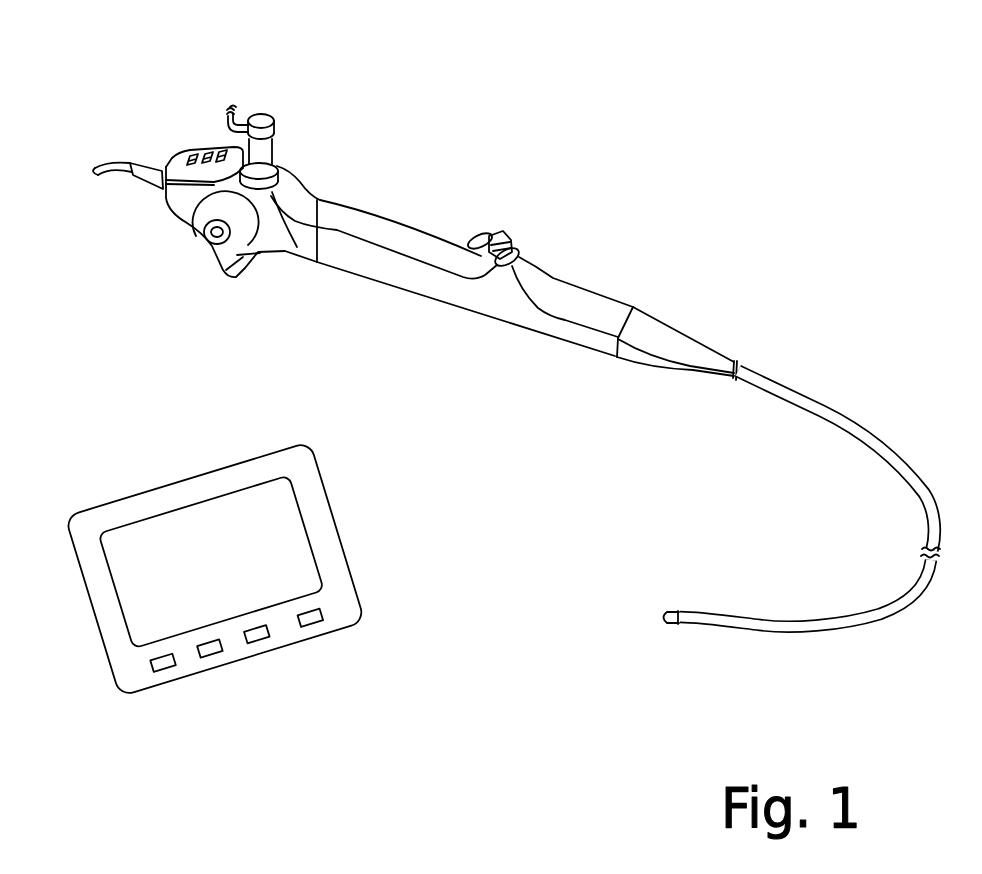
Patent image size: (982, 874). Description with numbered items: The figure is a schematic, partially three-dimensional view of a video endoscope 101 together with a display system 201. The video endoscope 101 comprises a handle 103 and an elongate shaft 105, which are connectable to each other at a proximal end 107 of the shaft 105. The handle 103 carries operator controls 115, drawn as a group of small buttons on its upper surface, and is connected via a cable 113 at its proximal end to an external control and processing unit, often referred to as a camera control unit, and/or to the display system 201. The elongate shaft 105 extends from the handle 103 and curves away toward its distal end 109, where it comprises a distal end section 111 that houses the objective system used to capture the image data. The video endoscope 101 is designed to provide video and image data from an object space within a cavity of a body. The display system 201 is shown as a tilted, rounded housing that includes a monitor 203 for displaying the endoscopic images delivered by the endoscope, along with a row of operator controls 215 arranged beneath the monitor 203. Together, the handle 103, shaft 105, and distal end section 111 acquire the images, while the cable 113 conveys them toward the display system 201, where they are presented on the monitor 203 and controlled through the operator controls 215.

The video endoscope 101 is at (445, 200).
The handle 103 is at (352, 207).
The elongate shaft 105 is at (825, 405).
The proximal end 107 is at (768, 345).
The distal end 109 is at (613, 617).
The distal end section 111 is at (670, 612).
The cable 113 is at (108, 161).
The operator controls 115 is at (207, 148).
The display system 201 is at (149, 466).
The monitor 203 is at (257, 527).
The operator controls 215 is at (208, 657).